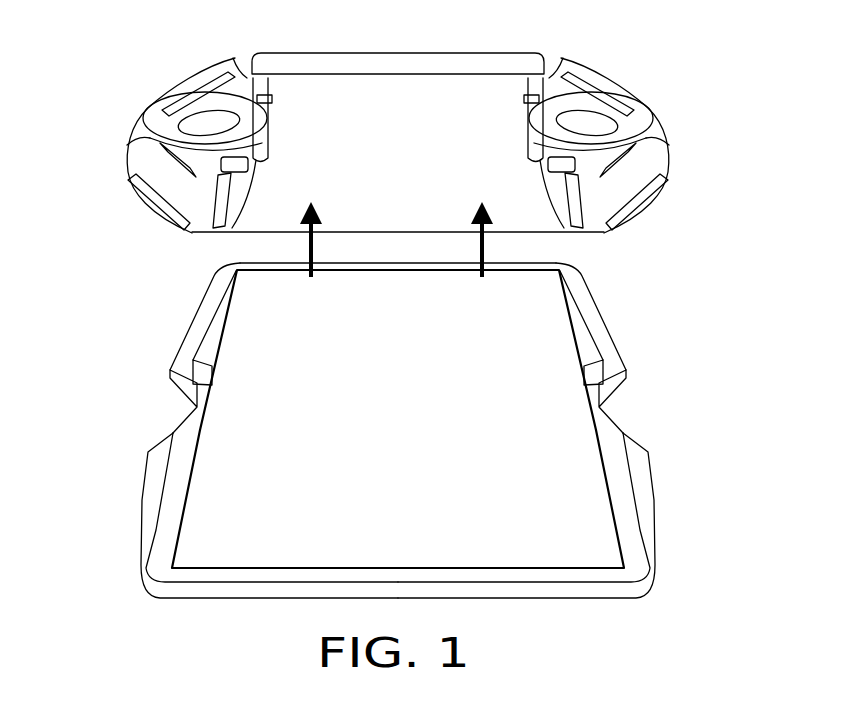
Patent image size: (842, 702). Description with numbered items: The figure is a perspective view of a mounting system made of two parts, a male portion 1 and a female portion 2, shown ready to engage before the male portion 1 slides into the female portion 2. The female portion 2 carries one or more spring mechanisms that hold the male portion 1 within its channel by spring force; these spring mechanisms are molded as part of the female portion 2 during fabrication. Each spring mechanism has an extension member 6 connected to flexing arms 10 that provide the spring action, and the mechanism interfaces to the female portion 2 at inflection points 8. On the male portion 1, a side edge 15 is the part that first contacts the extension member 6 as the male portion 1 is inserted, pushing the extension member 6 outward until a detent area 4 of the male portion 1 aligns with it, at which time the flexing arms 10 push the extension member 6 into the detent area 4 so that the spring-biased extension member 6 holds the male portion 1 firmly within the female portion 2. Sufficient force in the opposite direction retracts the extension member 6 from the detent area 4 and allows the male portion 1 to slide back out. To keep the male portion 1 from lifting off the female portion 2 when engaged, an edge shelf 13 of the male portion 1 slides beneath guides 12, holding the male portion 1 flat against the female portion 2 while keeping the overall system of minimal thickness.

The male portion 1 is at (407, 408).
The female portion 2 is at (407, 154).
The detent area 4 is at (174, 409).
The extension member 6 is at (258, 118).
The inflection points 8 is at (244, 68).
The flexing arms 10 is at (180, 84).
The guides 12 is at (262, 84).
The edge shelf 13 is at (190, 338).
The side edge 15 is at (213, 307).